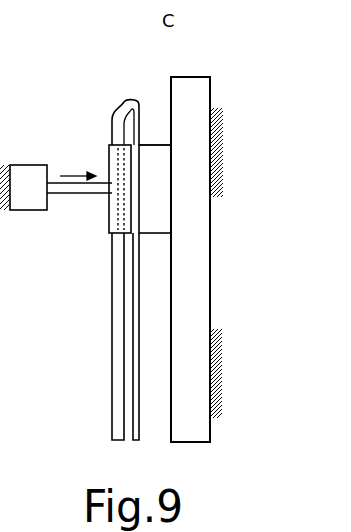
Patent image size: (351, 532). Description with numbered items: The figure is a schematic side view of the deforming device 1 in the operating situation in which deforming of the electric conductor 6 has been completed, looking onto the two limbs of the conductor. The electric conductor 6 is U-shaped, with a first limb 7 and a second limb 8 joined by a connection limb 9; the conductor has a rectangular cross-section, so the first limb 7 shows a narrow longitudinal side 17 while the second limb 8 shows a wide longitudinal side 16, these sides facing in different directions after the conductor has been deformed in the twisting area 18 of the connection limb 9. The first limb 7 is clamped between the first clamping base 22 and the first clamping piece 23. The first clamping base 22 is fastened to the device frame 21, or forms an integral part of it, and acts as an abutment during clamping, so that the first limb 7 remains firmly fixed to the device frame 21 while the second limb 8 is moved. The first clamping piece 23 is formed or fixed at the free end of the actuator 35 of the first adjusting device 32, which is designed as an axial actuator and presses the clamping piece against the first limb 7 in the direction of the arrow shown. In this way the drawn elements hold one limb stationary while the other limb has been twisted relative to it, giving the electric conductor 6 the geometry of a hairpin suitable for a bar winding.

The deforming device 1 is at (66, 300).
The electric conductor 6 is at (102, 104).
The connection limb 9 is at (132, 100).
The first limb 7 is at (101, 336).
The narrow longitudinal side 17 is at (133, 340).
The second limb 8 is at (94, 336).
The wide longitudinal side 16 is at (112, 385).
The twisting area 18 is at (155, 96).
The device frame 21 is at (210, 283).
The first clamping base 22 is at (155, 202).
The first clamping piece 23 is at (109, 217).
The first adjusting device 32 is at (41, 198).
The actuator 35 is at (73, 193).